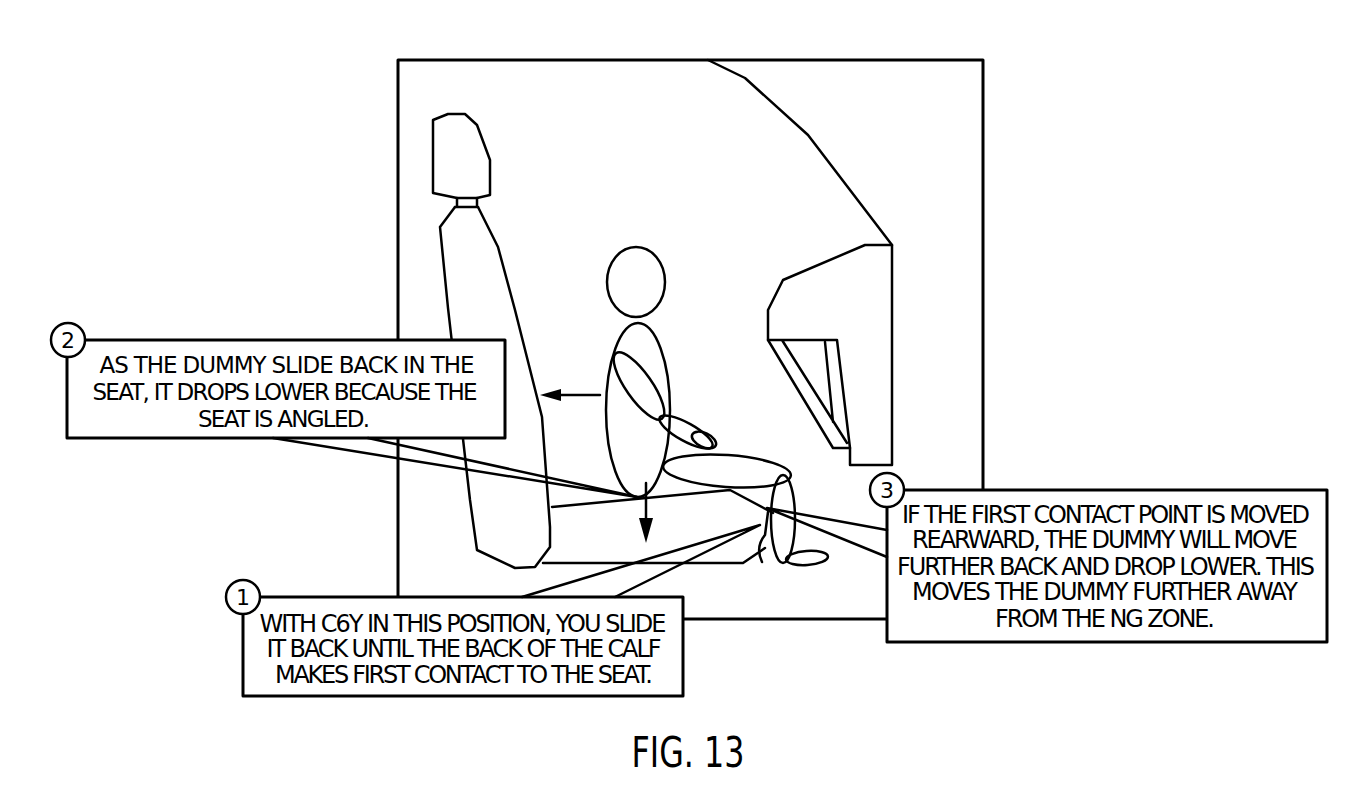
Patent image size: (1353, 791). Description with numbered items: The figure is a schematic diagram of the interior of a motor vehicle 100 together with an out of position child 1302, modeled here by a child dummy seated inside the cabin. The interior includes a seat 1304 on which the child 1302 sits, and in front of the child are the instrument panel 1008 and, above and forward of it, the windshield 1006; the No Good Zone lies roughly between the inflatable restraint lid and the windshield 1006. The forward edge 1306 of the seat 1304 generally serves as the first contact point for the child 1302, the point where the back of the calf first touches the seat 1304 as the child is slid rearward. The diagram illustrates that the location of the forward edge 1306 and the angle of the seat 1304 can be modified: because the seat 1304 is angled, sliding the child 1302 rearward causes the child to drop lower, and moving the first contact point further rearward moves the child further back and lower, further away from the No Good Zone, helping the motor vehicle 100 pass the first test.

The motor vehicle 100 is at (577, 544).
The windshield 1006 is at (836, 168).
The instrument panel 1008 is at (822, 272).
The out of position child 1302 is at (636, 258).
The seat 1304 is at (490, 272).
The forward edge 1306 is at (757, 556).